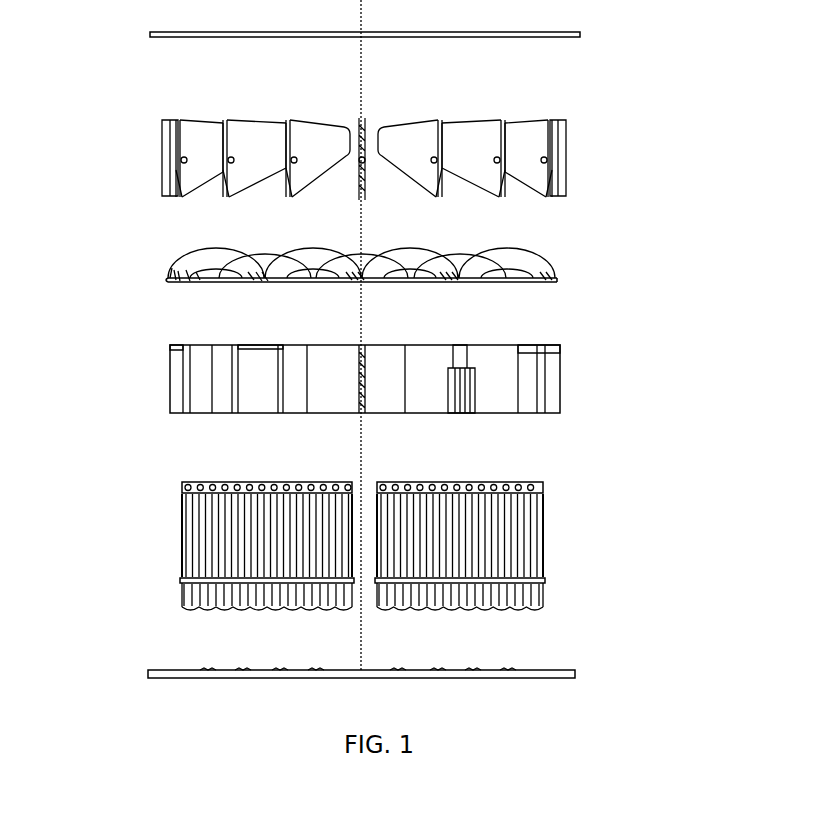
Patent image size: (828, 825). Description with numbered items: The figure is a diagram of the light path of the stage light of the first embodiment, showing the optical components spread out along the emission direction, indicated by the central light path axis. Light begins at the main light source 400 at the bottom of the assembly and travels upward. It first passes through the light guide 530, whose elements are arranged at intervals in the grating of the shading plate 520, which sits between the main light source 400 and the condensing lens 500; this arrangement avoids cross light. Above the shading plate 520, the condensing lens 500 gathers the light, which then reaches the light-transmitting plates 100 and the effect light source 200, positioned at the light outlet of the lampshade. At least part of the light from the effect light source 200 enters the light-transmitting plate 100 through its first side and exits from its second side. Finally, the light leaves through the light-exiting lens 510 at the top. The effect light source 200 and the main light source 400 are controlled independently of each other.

The light-transmitting plate 100 is at (178, 158).
The effect light source 200 is at (568, 160).
The main light source 400 is at (518, 670).
The condensing lens 500 is at (555, 278).
The light-exiting lens 510 is at (580, 35).
The shading plate 520 is at (190, 368).
The light guide 530 is at (186, 548).
The element light path is at (362, 460).